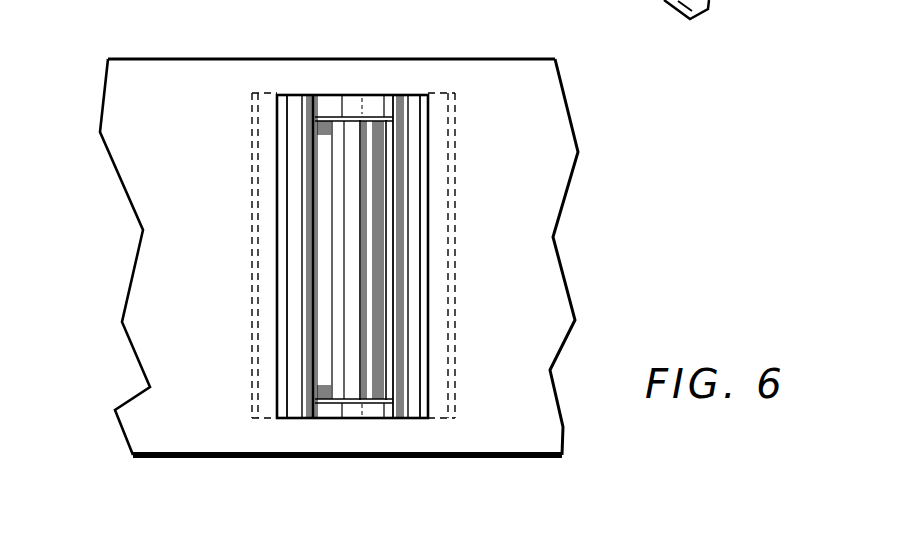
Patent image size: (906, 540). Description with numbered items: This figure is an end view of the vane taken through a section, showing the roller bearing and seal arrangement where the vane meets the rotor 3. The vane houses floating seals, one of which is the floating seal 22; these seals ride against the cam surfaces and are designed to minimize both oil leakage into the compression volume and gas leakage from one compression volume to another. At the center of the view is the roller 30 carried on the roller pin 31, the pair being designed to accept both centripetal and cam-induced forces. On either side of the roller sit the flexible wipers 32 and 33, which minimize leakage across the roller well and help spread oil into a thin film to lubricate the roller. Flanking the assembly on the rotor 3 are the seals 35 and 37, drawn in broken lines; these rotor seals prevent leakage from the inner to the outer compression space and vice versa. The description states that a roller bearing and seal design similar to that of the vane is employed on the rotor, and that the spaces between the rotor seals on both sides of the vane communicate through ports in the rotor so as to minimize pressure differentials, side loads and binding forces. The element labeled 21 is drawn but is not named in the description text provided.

The rotor 3 is at (133, 168).
The outer frame member 21 is at (292, 292).
The floating seal 22 is at (312, 250).
The roller 30 is at (352, 161).
The roller pin 31 is at (346, 108).
The flexible wiper 32 is at (325, 213).
The flexible wiper 33 is at (382, 248).
The seal 35 is at (257, 138).
The seal 37 is at (455, 137).